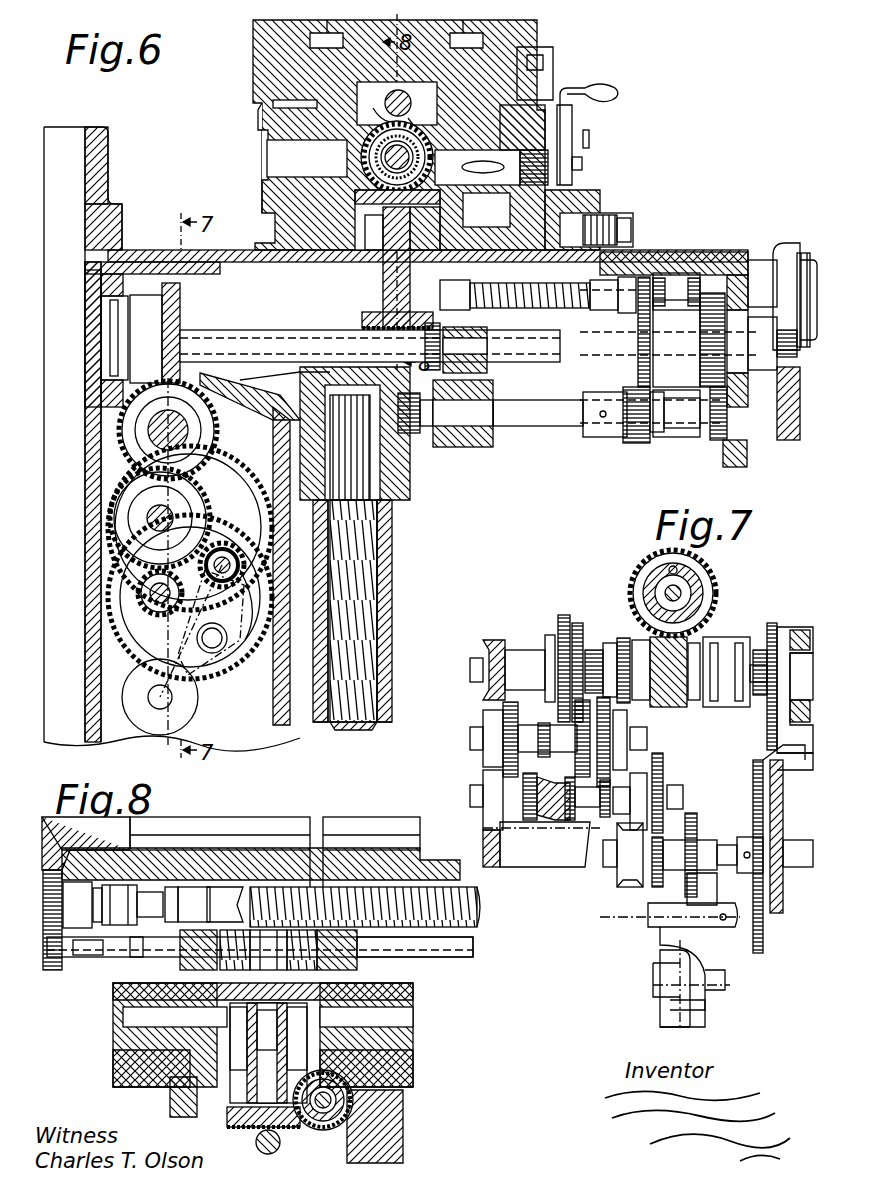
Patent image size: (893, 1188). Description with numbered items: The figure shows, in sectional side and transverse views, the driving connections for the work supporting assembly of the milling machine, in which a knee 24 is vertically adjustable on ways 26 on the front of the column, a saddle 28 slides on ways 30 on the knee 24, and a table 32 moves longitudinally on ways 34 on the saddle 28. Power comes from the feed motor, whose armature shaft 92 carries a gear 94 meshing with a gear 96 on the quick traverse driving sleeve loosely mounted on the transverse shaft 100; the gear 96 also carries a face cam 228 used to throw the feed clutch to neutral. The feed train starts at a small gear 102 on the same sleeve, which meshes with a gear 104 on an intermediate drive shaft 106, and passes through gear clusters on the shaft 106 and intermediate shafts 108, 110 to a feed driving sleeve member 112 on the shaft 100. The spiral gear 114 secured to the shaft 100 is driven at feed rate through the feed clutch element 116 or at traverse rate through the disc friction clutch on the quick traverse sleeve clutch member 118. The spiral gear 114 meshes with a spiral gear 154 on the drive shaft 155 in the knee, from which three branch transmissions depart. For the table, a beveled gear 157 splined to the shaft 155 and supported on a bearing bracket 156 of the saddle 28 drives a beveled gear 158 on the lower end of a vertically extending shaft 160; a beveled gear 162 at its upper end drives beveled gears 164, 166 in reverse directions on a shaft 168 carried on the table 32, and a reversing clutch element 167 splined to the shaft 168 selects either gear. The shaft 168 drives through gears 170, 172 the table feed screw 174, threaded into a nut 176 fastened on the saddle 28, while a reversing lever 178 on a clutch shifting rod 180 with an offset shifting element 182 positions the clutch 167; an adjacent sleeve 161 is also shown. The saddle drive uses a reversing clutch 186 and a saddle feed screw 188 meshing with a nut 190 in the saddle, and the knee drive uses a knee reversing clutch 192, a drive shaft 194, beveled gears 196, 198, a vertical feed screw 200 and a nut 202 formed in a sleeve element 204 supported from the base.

In FIG. 6, the knee 24 is at (153, 250).
In FIG. 7, the knee 24 is at (765, 900).
In FIG. 6, the ways 26 is at (70, 135).
In FIG. 6, the saddle 28 is at (283, 200).
In FIG. 8, the saddle 28 is at (415, 1027).
In FIG. 6, the ways 30 is at (727, 252).
In FIG. 8, the ways 30 is at (410, 1063).
In FIG. 6, the table 32 is at (540, 37).
In FIG. 8, the table 32 is at (243, 817).
In FIG. 6, the ways 34 is at (275, 104).
In FIG. 7, the armature shaft 92 is at (795, 745).
In FIG. 7, the gear 94 is at (783, 770).
In FIG. 7, the gear 96 is at (773, 628).
In FIG. 6, the transverse shaft 100 is at (150, 450).
In FIG. 7, the transverse shaft 100 is at (525, 667).
In FIG. 7, the small gear 102 is at (760, 700).
In FIG. 6, the gear 104 is at (243, 682).
In FIG. 7, the gear 104 is at (755, 770).
In FIG. 6, the intermediate drive shaft 106 is at (237, 592).
In FIG. 7, the intermediate drive shaft 106 is at (730, 845).
In FIG. 6, the intermediate shaft 108 is at (138, 593).
In FIG. 7, the intermediate shaft 108 is at (505, 833).
In FIG. 6, the intermediate shaft 110 is at (205, 500).
In FIG. 7, the intermediate shaft 110 is at (522, 740).
In FIG. 6, the feed driving sleeve member 112 is at (218, 432).
In FIG. 7, the feed driving sleeve member 112 is at (527, 655).
In FIG. 7, the spiral gear 114 is at (668, 707).
In FIG. 7, the feed clutch element 116 is at (623, 640).
In FIG. 7, the quick traverse sleeve clutch member 118 is at (727, 640).
In FIG. 6, the spiral gear 154 is at (185, 322).
In FIG. 7, the spiral gear 154 is at (641, 566).
In FIG. 6, the drive shaft 155 is at (570, 345).
In FIG. 7, the drive shaft 155 is at (650, 597).
In FIG. 8, the drive shaft 155 is at (255, 1145).
In FIG. 6, the bearing bracket 156 is at (480, 367).
In FIG. 6, the beveled gear 157 is at (456, 348).
In FIG. 6, the beveled gear 158 is at (362, 322).
In FIG. 8, the beveled gear 158 is at (235, 1120).
In FIG. 6, the vertically extending shaft 160 is at (380, 260).
In FIG. 8, the vertically extending shaft 160 is at (245, 1093).
In FIG. 8, the sleeve 161 is at (272, 950).
In FIG. 6, the beveled gear 162 is at (486, 209).
In FIG. 8, the beveled gear 162 is at (278, 1028).
In FIG. 8, the beveled gear 164 is at (215, 950).
In FIG. 6, the beveled gear 166 is at (378, 115).
In FIG. 8, the beveled gear 166 is at (323, 950).
In FIG. 6, the reversing clutch element 167 is at (430, 116).
In FIG. 6, the shaft 168 is at (418, 98).
In FIG. 8, the shaft 168 is at (475, 972).
In FIG. 8, the gear 170 is at (52, 970).
In FIG. 8, the gear 172 is at (86, 843).
In FIG. 6, the table feed screw 174 is at (362, 158).
In FIG. 8, the table feed screw 174 is at (352, 887).
In FIG. 8, the nut 176 is at (475, 940).
In FIG. 6, the reversing lever 178 is at (572, 120).
In FIG. 6, the clutch shifting rod 180 is at (583, 163).
In FIG. 6, the offset shifting element 182 is at (477, 167).
In FIG. 6, the reversing clutch 186 is at (673, 275).
In FIG. 8, the reversing clutch 186 is at (325, 1130).
In FIG. 6, the saddle feed screw 188 is at (530, 284).
In FIG. 8, the saddle feed screw 188 is at (312, 1118).
In FIG. 6, the nut 190 is at (465, 283).
In FIG. 6, the knee reversing clutch 192 is at (677, 437).
In FIG. 6, the drive shaft 194 is at (515, 428).
In FIG. 6, the beveled gear 196 is at (412, 436).
In FIG. 6, the beveled gear 198 is at (300, 373).
In FIG. 6, the feed screw 200 is at (385, 522).
In FIG. 6, the nut 202 is at (380, 557).
In FIG. 6, the sleeve element 204 is at (312, 722).
In FIG. 7, the face cam 228 is at (773, 625).